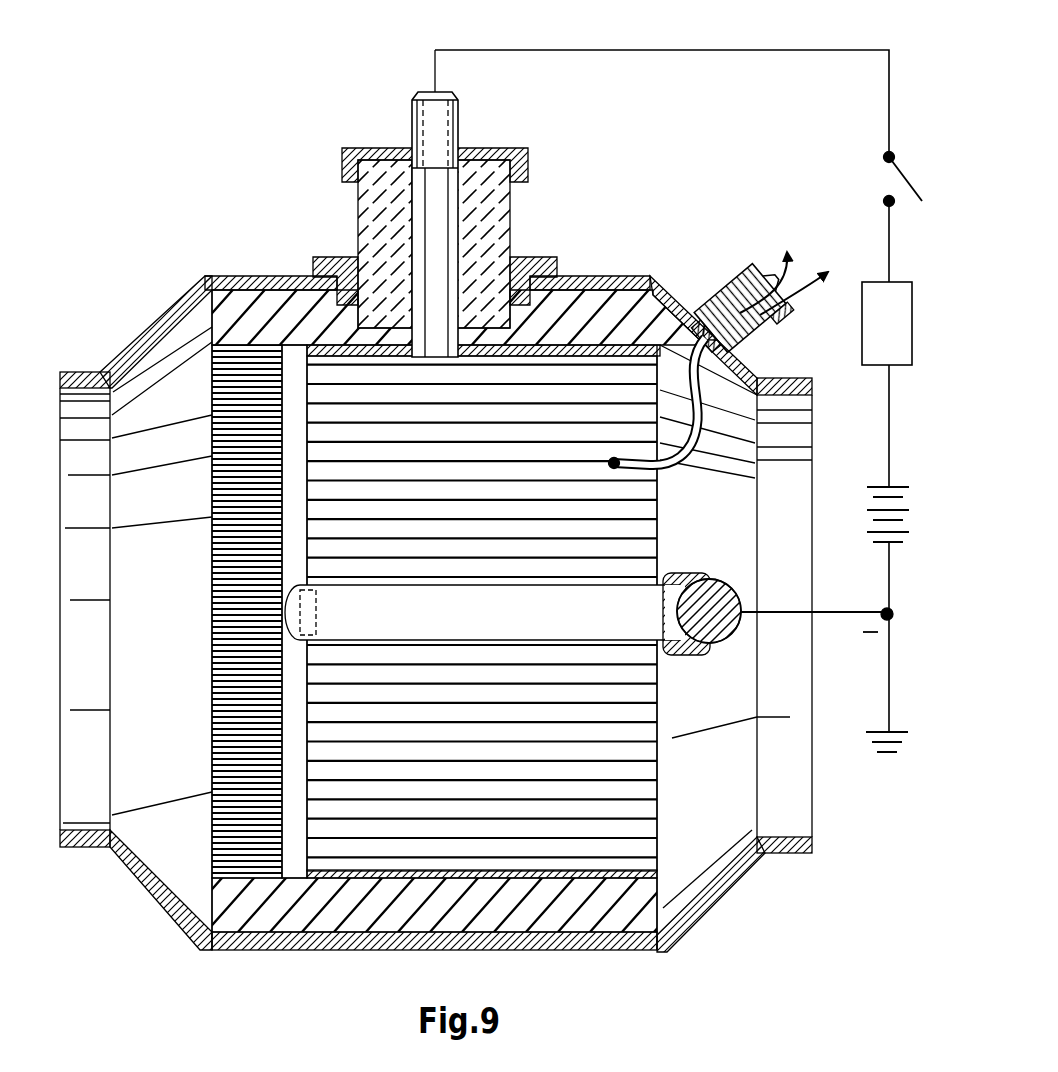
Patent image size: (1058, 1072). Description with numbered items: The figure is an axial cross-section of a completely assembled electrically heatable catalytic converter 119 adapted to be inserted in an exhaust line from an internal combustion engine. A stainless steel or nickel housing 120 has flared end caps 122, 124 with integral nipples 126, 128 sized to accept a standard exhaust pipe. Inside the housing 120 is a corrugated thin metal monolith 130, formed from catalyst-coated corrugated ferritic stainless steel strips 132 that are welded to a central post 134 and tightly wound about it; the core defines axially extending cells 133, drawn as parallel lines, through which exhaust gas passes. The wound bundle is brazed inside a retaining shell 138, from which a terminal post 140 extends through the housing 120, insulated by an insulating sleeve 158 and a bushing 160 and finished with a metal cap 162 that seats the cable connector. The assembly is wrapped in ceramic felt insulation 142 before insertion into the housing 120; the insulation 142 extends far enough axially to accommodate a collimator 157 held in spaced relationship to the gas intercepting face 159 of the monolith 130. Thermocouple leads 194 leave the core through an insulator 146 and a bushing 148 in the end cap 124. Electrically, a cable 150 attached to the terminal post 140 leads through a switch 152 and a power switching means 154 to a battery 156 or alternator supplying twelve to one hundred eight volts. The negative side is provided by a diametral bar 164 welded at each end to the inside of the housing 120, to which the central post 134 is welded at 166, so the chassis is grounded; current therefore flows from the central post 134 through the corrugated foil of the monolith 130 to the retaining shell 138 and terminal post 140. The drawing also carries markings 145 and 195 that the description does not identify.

The electrically heatable catalytic converter 119 is at (586, 254).
The housing 120 is at (617, 275).
The flared end cap 122 is at (170, 310).
The flared end cap 124 is at (765, 341).
The nipple 126 is at (78, 378).
The nipple 128 is at (780, 383).
The corrugated thin metal monolith 130 is at (665, 838).
The strips 132 is at (330, 813).
The cells 133 is at (553, 810).
The central post 134 is at (487, 626).
The retaining shell 138 is at (476, 345).
The terminal post 140 is at (437, 122).
The insulation 142 is at (365, 915).
The direction arrows 145 is at (758, 300).
The insulator 146 is at (750, 266).
The bushing 148 is at (700, 296).
The cable 150 is at (760, 50).
The switch 152 is at (906, 182).
The power switching means 154 is at (876, 325).
The battery 156 is at (865, 508).
The collimator 157 is at (250, 693).
The insulating sleeve 158 is at (385, 215).
The gas intercepting face 159 is at (307, 749).
The bushing 160 is at (340, 262).
The metal cap 162 is at (505, 150).
The diametral bar 164 is at (715, 635).
The weld 166 is at (675, 575).
The leads 194 is at (740, 462).
The wire terminal 195 is at (620, 466).